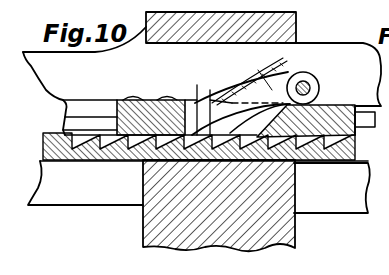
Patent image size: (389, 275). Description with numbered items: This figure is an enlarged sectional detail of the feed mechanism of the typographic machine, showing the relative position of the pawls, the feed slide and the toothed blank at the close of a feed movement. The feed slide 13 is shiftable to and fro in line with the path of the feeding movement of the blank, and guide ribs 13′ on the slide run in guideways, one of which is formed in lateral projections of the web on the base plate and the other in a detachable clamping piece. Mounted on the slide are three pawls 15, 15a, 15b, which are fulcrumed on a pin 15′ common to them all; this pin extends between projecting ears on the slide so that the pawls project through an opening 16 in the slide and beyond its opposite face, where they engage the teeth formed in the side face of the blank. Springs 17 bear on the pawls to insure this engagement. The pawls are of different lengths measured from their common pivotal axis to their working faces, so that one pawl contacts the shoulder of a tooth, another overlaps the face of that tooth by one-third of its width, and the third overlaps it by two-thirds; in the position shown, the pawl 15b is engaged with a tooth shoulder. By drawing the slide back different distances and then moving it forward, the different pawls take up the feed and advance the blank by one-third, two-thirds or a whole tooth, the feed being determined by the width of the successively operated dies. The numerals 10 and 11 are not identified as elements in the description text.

The frame 10 is at (117, 172).
The toothed rack 11 is at (88, 158).
The feed slide 13 is at (64, 120).
The guide ribs 13′ is at (75, 102).
The pawl 15 is at (241, 103).
The pin 15′ is at (309, 84).
The pawl 15a is at (232, 103).
The pawl 15b is at (263, 71).
The opening 16 is at (188, 102).
The springs 17 is at (155, 98).